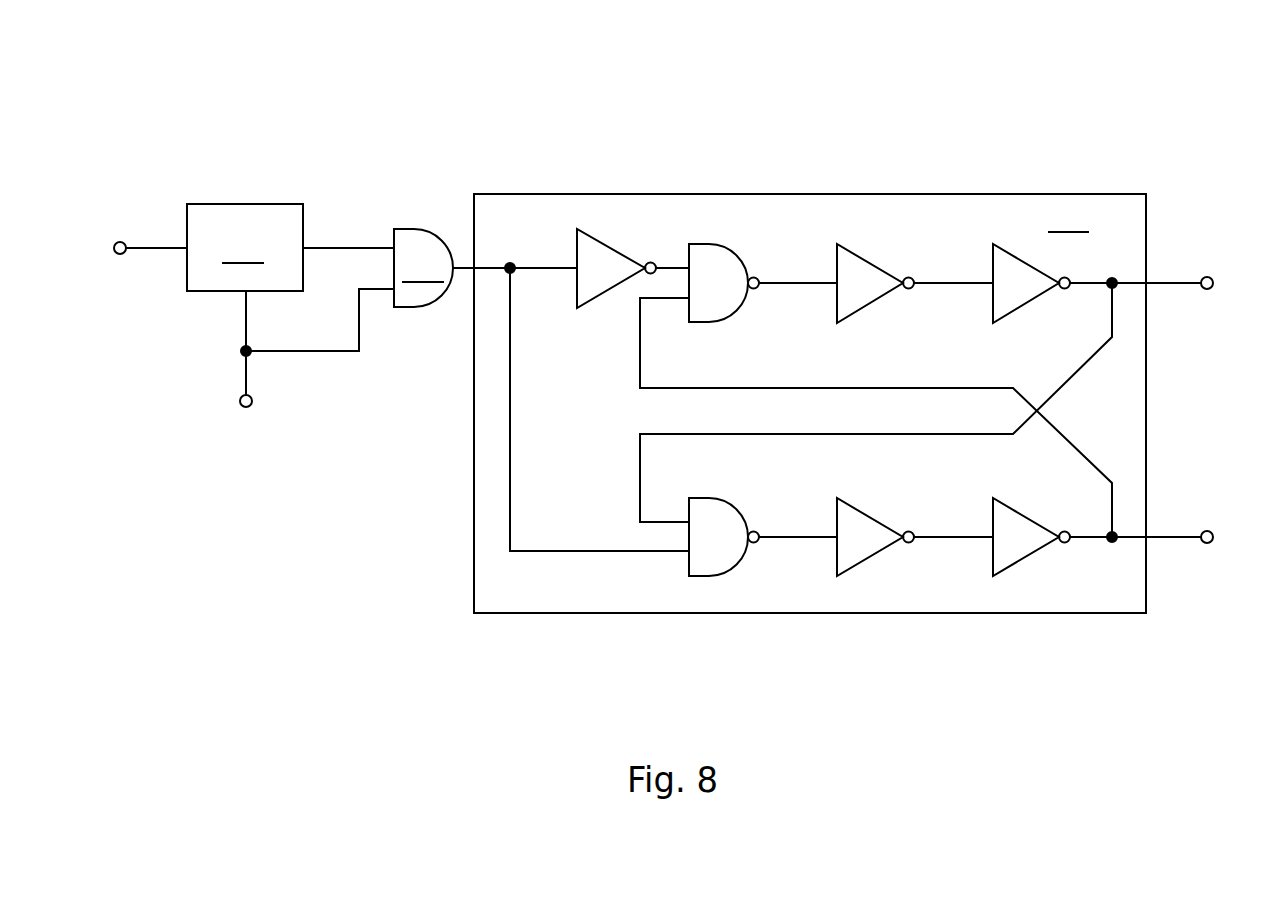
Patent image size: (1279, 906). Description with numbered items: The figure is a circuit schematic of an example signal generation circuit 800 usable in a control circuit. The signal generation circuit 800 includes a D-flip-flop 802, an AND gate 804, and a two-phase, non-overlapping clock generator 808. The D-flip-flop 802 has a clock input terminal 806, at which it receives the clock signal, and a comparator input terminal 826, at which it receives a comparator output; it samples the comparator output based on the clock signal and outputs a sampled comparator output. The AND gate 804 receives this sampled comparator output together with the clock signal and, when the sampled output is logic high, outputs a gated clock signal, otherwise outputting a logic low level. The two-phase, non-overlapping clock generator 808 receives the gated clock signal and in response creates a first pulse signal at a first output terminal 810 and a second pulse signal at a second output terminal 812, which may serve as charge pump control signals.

The signal generation circuit 800 is at (275, 68).
The D-flip-flop 802 is at (290, 247).
The AND gate 804 is at (485, 268).
The clock input terminal 806 is at (245, 332).
The two-phase, non-overlapping clock generator 808 is at (810, 403).
The first output terminal 810 is at (1168, 283).
The second output terminal 812 is at (1168, 537).
The comparator input terminal 826 is at (157, 248).